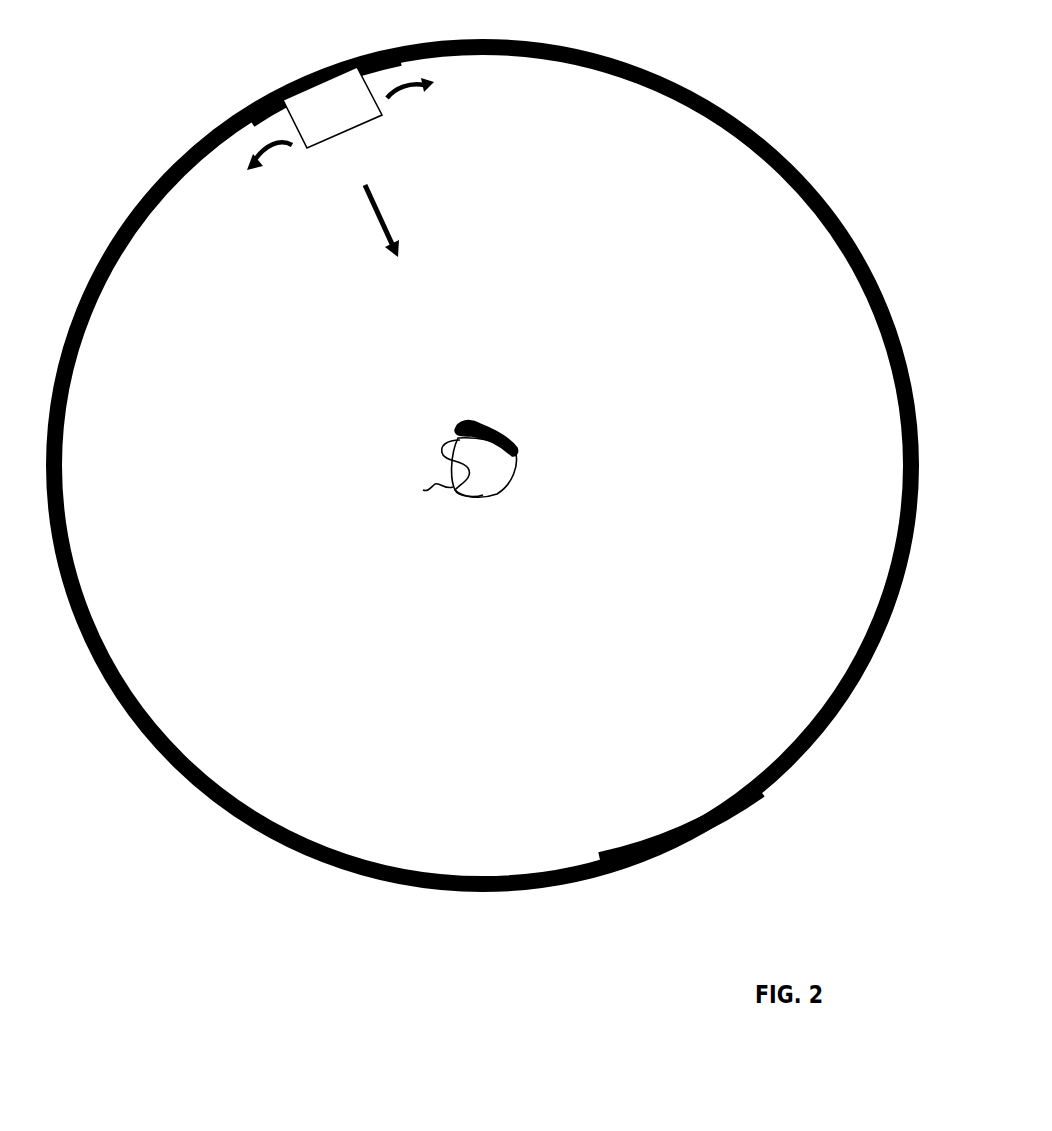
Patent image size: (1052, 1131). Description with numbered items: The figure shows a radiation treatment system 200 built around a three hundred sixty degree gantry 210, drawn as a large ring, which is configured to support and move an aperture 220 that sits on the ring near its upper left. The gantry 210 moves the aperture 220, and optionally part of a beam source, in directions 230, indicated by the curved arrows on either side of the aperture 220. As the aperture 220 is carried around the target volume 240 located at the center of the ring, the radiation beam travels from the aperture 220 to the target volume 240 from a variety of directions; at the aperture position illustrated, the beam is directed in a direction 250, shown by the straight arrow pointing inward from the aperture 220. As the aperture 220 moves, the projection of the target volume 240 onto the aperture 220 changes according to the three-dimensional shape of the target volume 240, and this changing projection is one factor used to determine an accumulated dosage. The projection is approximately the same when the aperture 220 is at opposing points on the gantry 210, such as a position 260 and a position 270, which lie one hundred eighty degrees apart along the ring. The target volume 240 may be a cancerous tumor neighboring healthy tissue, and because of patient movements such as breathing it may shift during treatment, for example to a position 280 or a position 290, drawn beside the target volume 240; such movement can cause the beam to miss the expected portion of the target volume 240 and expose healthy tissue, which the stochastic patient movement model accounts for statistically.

The radiation treatment system 200 is at (198, 866).
The gantry 210 is at (705, 98).
The aperture 220 is at (352, 132).
The directions 230 is at (270, 160).
The target volume 240 is at (507, 483).
The direction 250 is at (387, 222).
The position 260 is at (311, 75).
The position 270 is at (675, 852).
The position 280 is at (500, 427).
The position 290 is at (442, 482).